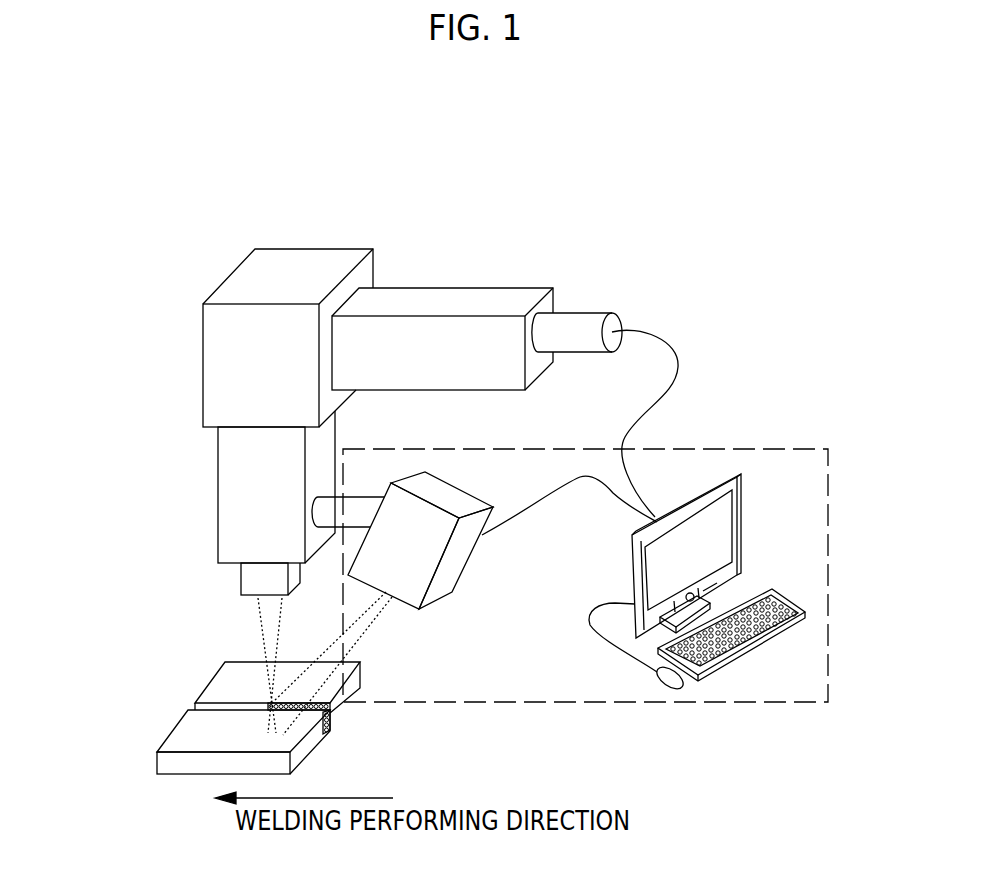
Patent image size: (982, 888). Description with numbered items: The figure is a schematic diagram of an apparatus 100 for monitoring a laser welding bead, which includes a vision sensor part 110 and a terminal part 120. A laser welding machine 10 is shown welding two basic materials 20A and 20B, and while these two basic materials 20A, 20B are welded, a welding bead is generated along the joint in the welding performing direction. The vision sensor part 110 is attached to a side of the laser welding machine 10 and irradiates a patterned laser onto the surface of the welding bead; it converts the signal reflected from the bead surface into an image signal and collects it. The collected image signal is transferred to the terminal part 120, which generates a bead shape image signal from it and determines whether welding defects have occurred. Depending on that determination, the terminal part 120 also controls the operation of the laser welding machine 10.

The laser welding machine 10 is at (290, 230).
The basic material 20A is at (220, 675).
The basic material 20B is at (190, 731).
The apparatus for monitoring a laser welding bead 100 is at (548, 703).
The vision sensor part 110 is at (440, 590).
The terminal part 120 is at (738, 462).